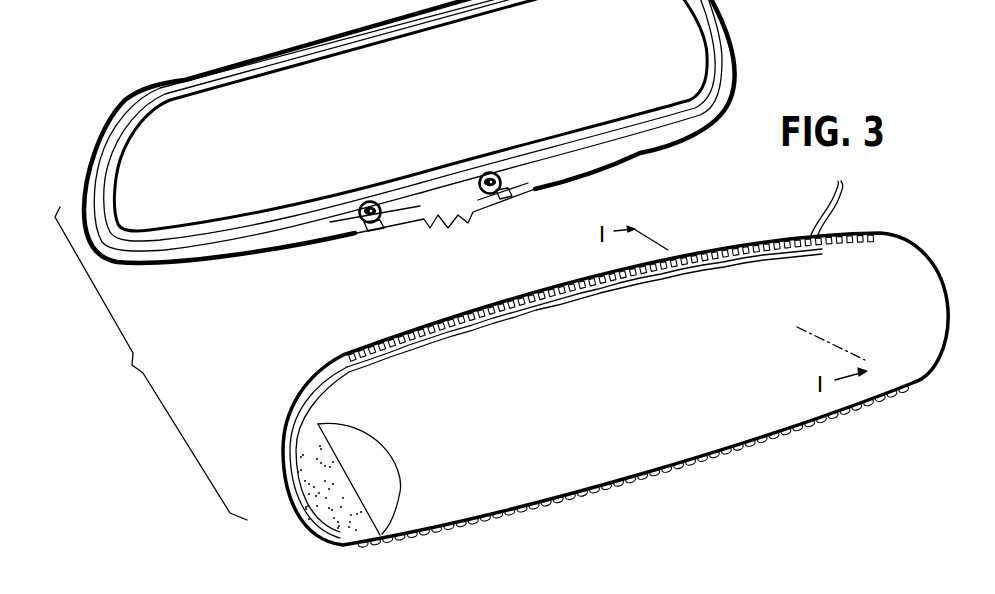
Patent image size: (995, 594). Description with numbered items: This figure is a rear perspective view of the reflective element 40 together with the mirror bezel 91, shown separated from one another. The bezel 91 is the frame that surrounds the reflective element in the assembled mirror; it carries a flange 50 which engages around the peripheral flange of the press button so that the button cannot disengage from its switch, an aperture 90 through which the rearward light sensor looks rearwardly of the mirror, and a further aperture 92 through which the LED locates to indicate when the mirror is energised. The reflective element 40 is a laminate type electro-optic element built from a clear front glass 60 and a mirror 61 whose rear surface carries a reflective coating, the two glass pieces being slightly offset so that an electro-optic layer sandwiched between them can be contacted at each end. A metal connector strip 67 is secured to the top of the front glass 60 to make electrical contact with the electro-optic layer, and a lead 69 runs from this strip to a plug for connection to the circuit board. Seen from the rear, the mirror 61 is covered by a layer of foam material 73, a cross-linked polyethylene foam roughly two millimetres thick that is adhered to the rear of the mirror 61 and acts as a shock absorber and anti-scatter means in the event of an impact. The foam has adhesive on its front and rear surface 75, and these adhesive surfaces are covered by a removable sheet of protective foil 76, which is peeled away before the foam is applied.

The electro optic reflective element 40 is at (302, 374).
The flange 50 is at (443, 212).
The front glass 60 is at (300, 419).
The mirror 61 is at (290, 463).
The metal connector strip 67 is at (758, 237).
The lead 69 is at (843, 198).
The layer of foam material 73 is at (565, 456).
The rear surface 75 is at (342, 514).
The protective foil 76 is at (390, 490).
The aperture 90 is at (500, 196).
The bezel 91 is at (721, 50).
The aperture 92 is at (378, 235).